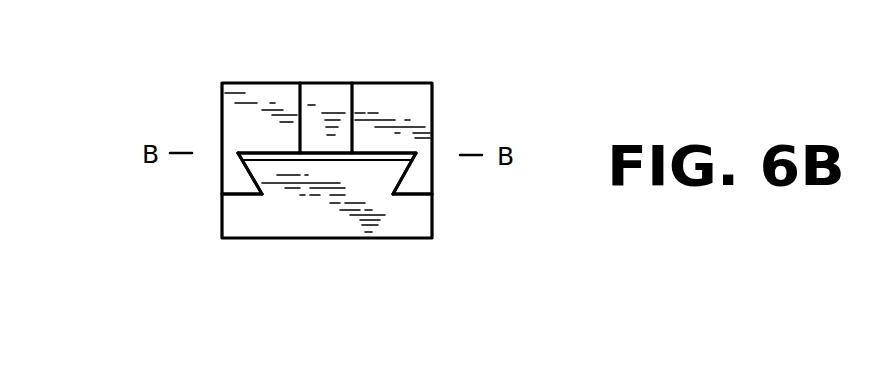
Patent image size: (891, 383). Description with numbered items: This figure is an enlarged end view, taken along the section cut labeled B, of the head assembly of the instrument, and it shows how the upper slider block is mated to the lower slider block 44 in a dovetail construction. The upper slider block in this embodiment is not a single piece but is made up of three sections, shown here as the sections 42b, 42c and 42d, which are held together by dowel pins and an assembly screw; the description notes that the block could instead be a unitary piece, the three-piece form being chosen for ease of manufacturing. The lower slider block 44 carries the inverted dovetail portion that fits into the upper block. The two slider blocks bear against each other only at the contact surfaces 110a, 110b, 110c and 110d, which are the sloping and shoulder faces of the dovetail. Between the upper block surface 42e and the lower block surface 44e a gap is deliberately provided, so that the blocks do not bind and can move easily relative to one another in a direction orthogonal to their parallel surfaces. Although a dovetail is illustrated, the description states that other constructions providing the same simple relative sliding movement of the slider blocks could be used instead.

The first section of upper slider block 42b is at (225, 93).
The second section of upper slider block 42c is at (337, 92).
The surface of upper slider block 42e is at (307, 153).
The third section of upper slider block 42d is at (424, 104).
The lower slider block 44 is at (432, 223).
The surface of lower slider block 44e is at (325, 163).
The contact surface 110a is at (240, 198).
The contact surface 110b is at (262, 183).
The contact surface 110c is at (397, 187).
The contact surface 110d is at (410, 195).